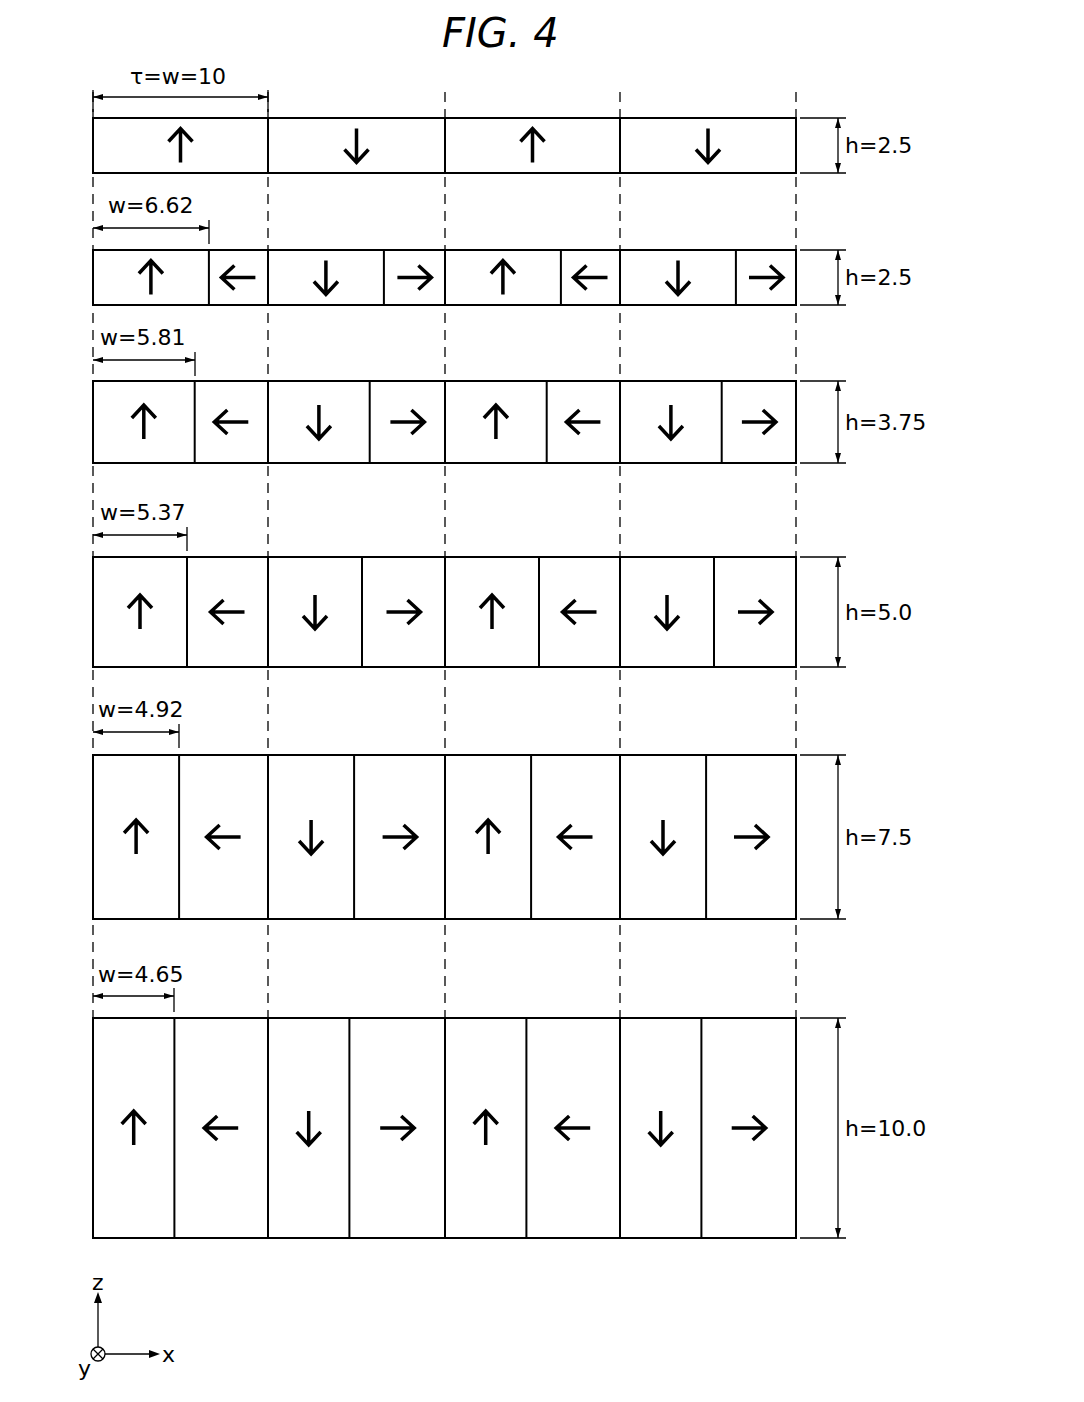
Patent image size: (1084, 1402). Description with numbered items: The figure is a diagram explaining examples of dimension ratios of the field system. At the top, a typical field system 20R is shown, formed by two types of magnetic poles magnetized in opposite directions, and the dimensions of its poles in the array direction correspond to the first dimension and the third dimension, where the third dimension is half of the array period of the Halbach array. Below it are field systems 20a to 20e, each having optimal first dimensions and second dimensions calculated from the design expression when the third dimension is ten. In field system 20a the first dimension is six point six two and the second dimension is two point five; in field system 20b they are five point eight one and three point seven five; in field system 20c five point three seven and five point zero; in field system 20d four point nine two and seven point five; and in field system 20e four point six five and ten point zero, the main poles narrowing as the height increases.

The typical field system 20R is at (707, 116).
The field system 20a is at (707, 248).
The field system 20b is at (707, 379).
The field system 20c is at (707, 555).
The field system 20d is at (707, 753).
The field system 20e is at (707, 1016).